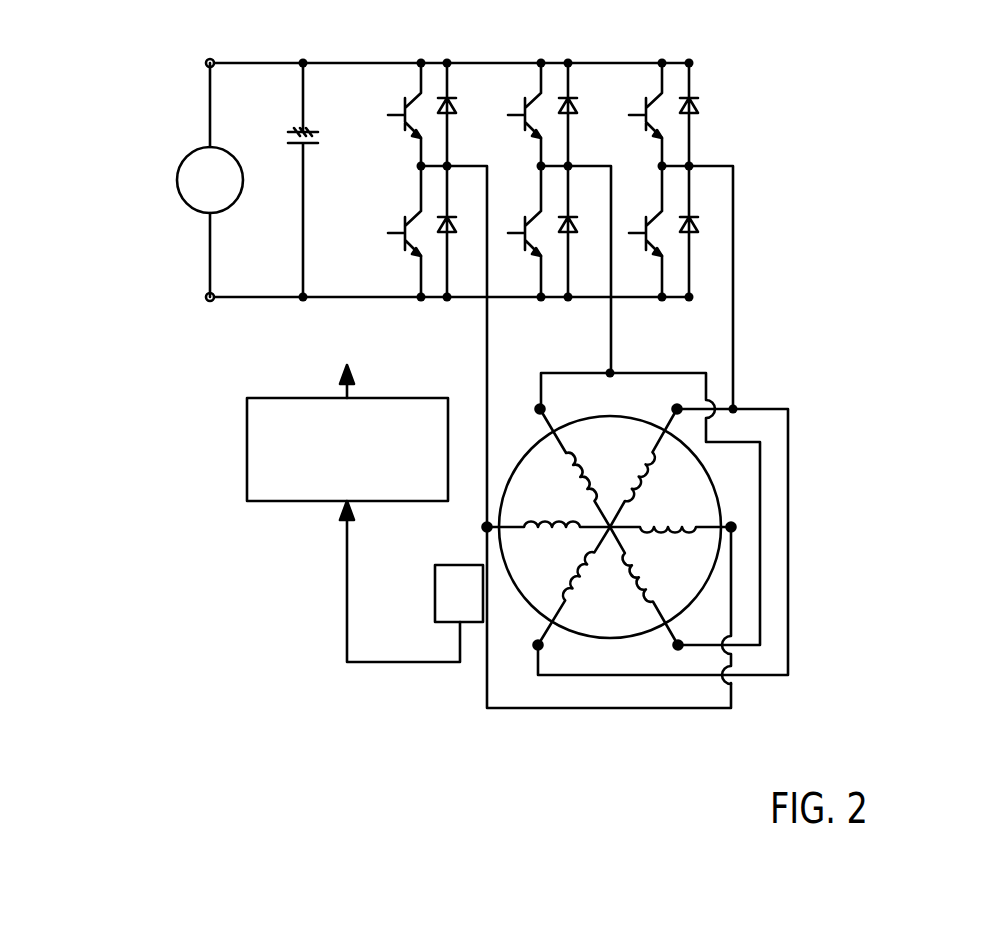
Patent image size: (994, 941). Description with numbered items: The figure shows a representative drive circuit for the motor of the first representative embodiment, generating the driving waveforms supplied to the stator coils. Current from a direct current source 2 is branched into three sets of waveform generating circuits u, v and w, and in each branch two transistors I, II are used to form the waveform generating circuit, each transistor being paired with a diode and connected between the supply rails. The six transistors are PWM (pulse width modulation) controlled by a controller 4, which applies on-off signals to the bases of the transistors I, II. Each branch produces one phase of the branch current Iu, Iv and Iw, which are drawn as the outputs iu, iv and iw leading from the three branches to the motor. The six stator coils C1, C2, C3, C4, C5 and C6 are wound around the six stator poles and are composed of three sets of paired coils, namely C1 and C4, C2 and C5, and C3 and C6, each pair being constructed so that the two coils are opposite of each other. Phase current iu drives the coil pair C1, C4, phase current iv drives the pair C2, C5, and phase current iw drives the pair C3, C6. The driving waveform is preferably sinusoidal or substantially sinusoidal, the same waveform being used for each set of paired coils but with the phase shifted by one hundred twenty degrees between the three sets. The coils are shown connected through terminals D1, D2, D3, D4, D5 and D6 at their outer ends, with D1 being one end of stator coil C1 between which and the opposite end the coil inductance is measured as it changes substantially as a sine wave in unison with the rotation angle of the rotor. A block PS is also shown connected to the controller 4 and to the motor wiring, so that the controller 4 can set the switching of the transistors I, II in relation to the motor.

The direct current source 2 is at (180, 166).
The controller 4 is at (277, 501).
The transistor I is at (510, 114).
The transistor II is at (508, 231).
The waveform generating circuit u is at (432, 39).
The waveform generating circuit v is at (555, 39).
The waveform generating circuit w is at (676, 39).
The phase current Iu iu is at (506, 347).
The phase current Iv iv is at (632, 347).
The phase current Iw iw is at (763, 347).
The stator coil C1 is at (640, 488).
The stator coil C2 is at (657, 538).
The stator coil C3 is at (642, 596).
The stator coil C4 is at (562, 590).
The stator coil C5 is at (556, 518).
The stator coil C6 is at (583, 452).
The end of stator coil C1 D1 is at (659, 409).
The coil terminal D2 is at (736, 527).
The coil terminal D3 is at (679, 650).
The coil terminal D4 is at (540, 650).
The coil terminal D5 is at (483, 528).
The coil terminal D6 is at (518, 409).
The position sensor PS is at (411, 581).